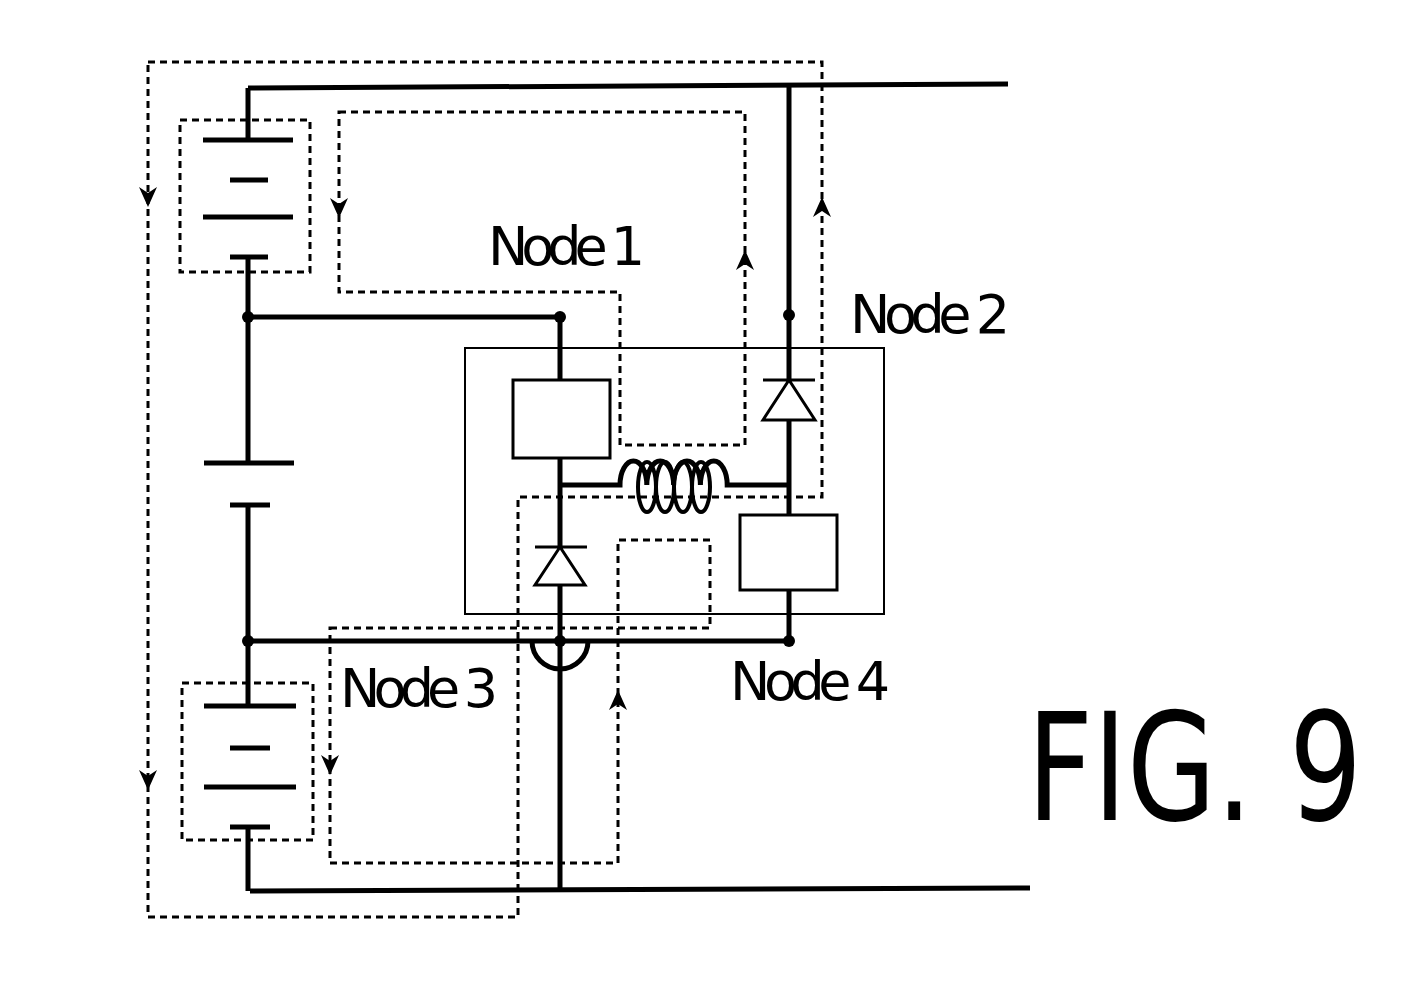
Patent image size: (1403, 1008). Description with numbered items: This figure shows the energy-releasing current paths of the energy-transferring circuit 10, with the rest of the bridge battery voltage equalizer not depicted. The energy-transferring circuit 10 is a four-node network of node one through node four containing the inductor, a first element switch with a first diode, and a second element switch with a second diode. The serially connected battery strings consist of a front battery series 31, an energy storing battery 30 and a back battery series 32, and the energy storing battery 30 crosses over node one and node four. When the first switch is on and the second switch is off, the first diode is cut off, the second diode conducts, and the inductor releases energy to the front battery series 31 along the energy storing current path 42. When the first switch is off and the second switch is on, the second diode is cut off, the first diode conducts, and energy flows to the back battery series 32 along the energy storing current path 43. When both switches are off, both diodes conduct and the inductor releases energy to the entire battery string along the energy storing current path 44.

The energy-transferring circuit 10 is at (875, 498).
The energy storing battery 30 is at (275, 462).
The front battery series 31 is at (217, 270).
The back battery series 32 is at (240, 695).
The energy storing current path 42 is at (341, 280).
The energy storing current path 43 is at (620, 800).
The energy storing current path 44 is at (824, 176).